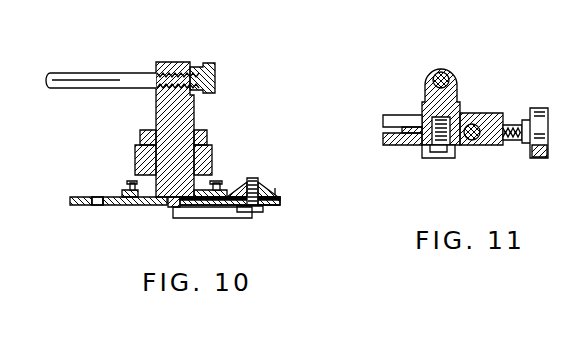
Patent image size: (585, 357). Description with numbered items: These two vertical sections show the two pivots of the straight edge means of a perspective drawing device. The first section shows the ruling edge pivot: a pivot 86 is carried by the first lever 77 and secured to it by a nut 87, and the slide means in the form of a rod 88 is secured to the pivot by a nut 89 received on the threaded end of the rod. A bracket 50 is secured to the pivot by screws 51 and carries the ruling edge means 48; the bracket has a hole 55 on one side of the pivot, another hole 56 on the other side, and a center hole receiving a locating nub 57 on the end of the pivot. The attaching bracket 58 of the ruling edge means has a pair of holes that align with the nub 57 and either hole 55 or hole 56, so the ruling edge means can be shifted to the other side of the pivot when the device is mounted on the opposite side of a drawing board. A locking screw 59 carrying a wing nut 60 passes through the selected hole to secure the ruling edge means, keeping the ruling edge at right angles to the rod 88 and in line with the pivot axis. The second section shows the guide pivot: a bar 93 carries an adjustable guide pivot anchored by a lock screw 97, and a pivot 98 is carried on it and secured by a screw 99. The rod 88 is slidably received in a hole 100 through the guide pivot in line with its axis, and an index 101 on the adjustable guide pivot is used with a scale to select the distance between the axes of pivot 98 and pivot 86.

In FIG. 10, the ruling edge means 48 is at (218, 213).
In FIG. 10, the bracket 50 is at (84, 196).
In FIG. 10, the screws 51 is at (132, 191).
In FIG. 10, the hole 55 is at (270, 207).
In FIG. 10, the hole 56 is at (100, 205).
In FIG. 10, the locating nub 57 is at (170, 206).
In FIG. 10, the attaching bracket 58 is at (281, 206).
In FIG. 10, the locking screw 59 is at (258, 213).
In FIG. 10, the wing nut 60 is at (277, 181).
In FIG. 10, the first lever 77 is at (212, 158).
In FIG. 10, the pivot 86 is at (195, 118).
In FIG. 10, the nut 87 is at (140, 137).
In FIG. 10, the rod 88 is at (97, 78).
In FIG. 11, the rod 88 is at (479, 90).
In FIG. 10, the nut 89 is at (207, 64).
In FIG. 11, the bar 93 is at (473, 141).
In FIG. 11, the lock screw 97 is at (539, 112).
In FIG. 11, the pivot 98 is at (449, 95).
In FIG. 11, the screw 99 is at (433, 156).
In FIG. 11, the hole 100 is at (431, 73).
In FIG. 11, the index 101 is at (413, 122).